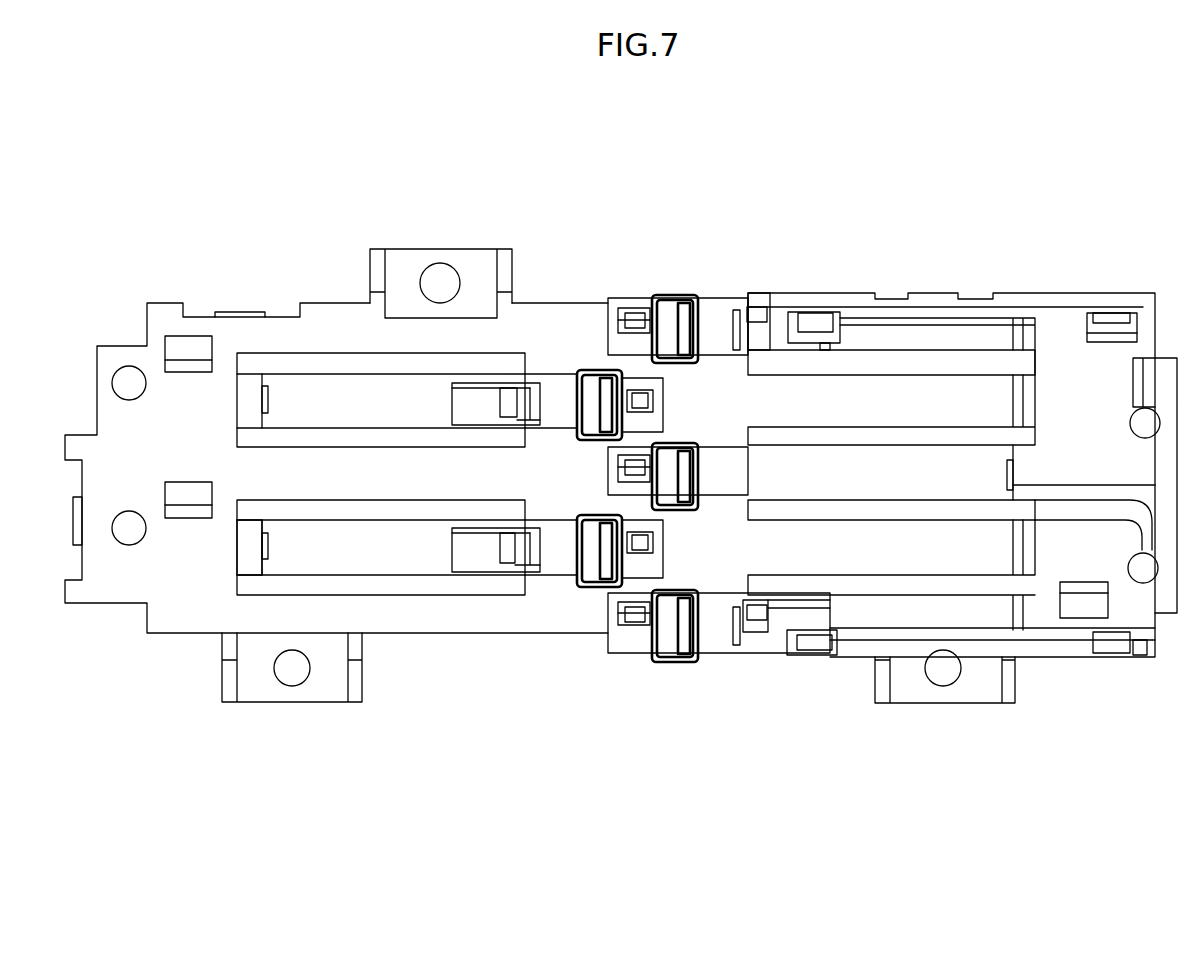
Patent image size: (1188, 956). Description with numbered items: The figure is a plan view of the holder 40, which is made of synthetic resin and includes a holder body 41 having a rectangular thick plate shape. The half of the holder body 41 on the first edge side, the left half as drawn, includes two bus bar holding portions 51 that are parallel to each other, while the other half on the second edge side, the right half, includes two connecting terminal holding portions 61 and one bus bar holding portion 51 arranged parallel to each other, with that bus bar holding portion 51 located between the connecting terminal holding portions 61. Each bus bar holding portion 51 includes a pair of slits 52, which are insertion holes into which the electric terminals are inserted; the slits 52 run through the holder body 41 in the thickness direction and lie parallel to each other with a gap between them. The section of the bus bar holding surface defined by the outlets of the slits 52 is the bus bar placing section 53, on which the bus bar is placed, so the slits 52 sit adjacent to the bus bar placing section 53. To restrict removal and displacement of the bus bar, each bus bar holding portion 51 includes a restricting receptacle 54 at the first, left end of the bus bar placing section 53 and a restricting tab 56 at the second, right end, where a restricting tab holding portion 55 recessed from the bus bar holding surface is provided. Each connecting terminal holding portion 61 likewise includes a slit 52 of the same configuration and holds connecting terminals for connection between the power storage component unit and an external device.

The holder 40 is at (1015, 180).
The holder body 41 is at (477, 617).
The bus bar holding portion 51 is at (328, 326).
The slit 52 is at (276, 512).
The bus bar placing section 53 is at (400, 553).
The restricting receptacle 54 is at (247, 547).
The restricting tab holding portion 55 is at (527, 524).
The restricting tab 56 is at (512, 553).
The connecting terminal holding portion 61 is at (939, 396).